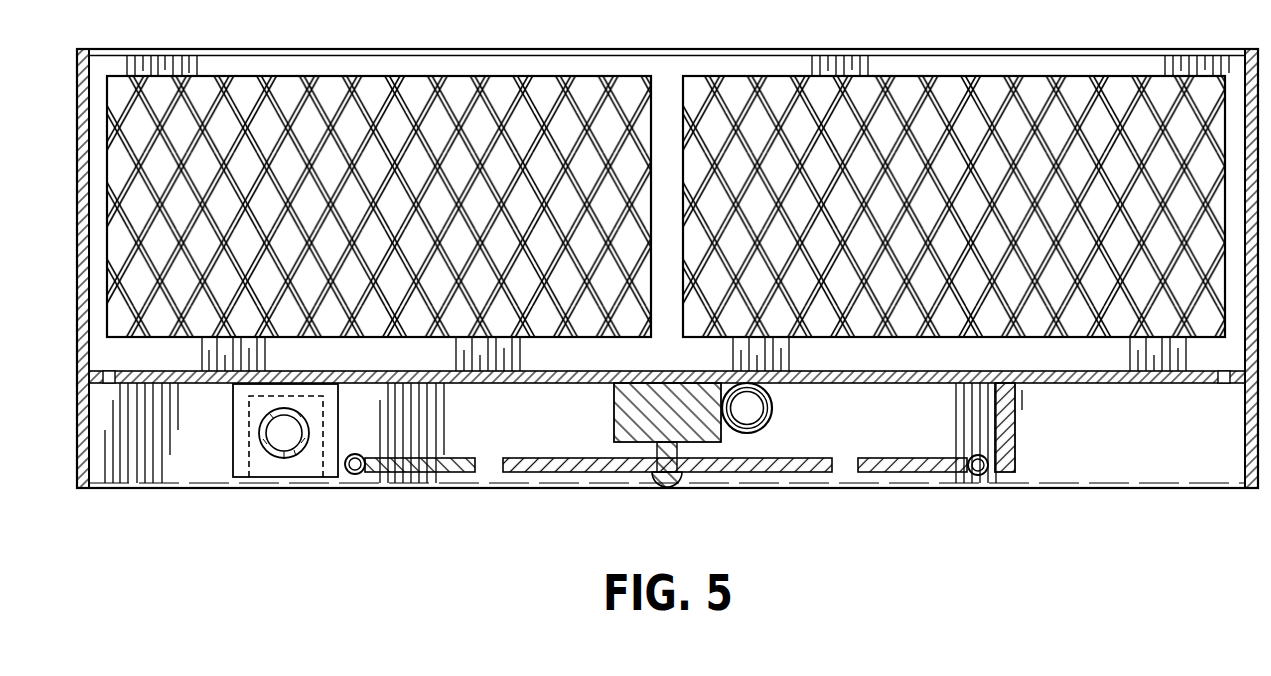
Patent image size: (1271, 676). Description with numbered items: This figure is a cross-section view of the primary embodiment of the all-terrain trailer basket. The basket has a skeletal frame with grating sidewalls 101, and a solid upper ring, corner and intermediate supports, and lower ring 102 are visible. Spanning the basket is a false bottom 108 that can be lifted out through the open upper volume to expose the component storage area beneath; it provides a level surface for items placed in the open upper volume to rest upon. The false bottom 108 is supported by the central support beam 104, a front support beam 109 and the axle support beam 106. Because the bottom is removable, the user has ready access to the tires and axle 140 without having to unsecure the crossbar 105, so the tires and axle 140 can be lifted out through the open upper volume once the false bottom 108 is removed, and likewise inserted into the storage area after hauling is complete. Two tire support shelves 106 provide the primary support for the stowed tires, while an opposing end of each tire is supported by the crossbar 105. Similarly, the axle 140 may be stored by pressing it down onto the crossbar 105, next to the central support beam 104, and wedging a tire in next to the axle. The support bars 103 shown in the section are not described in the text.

The grating sidewalls 101 is at (940, 113).
The lower ring 102 is at (1138, 455).
The support bar 103 is at (420, 467).
The central support beam 104 is at (637, 433).
The crossbar 105 is at (517, 467).
The tire support shelves 106 is at (267, 465).
The false bottom 108 is at (202, 377).
The front support beam 109 is at (1002, 458).
The tires and axle 140 is at (745, 430).